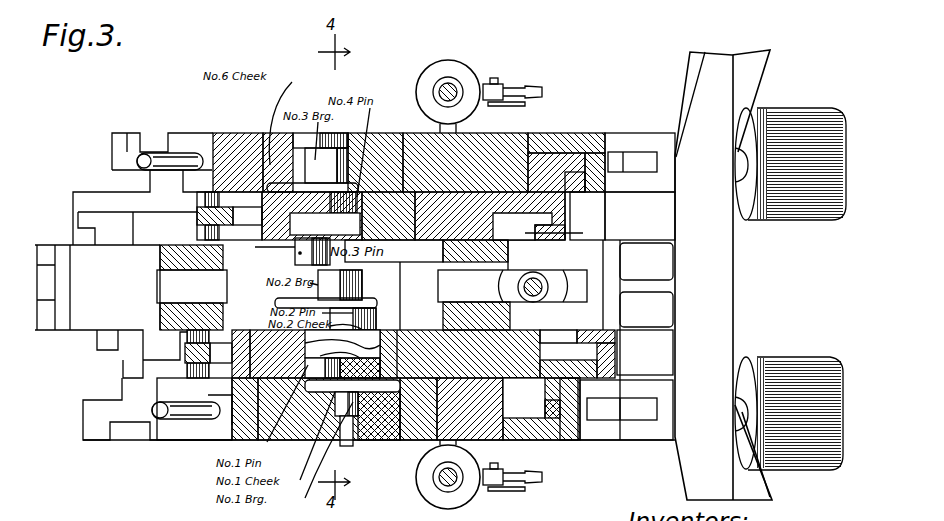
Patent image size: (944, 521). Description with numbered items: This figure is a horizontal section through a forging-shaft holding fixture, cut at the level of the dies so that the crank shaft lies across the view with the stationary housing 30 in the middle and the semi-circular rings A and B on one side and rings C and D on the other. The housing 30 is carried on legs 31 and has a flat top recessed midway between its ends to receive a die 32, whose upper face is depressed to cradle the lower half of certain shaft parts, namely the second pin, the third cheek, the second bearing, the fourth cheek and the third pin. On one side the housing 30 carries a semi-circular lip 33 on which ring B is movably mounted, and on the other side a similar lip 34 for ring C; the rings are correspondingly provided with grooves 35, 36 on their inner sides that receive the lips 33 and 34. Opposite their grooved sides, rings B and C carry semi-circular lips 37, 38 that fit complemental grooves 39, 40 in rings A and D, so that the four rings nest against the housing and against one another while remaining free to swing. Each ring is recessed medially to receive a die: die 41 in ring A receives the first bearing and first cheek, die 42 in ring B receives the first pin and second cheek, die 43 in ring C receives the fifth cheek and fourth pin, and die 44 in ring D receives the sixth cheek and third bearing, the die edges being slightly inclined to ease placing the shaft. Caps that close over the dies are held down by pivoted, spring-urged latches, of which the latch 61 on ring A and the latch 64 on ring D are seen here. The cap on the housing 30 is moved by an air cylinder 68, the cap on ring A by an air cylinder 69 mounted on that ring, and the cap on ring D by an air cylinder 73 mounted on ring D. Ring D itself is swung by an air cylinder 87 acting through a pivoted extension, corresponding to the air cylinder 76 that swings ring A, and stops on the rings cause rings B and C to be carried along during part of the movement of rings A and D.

The stationary housing 30 is at (588, 258).
The legs 31 is at (745, 78).
The die 32 is at (394, 251).
The semi-circular lip 33 is at (165, 350).
The semi-circular lip 34 is at (118, 232).
The groove 35 is at (580, 363).
The groove 36 is at (550, 214).
The semi-circular lip 37 is at (548, 430).
The semi-circular lip 38 is at (595, 132).
The groove 39 is at (515, 425).
The groove 40 is at (537, 160).
The die 41 is at (400, 437).
The die 42 is at (258, 345).
The die 43 is at (378, 205).
The die 44 is at (250, 150).
The latch 61 is at (215, 414).
The latch 64 is at (165, 157).
The air cylinder 68 is at (556, 298).
The air cylinder 69 is at (425, 484).
The air cylinder 73 is at (462, 74).
The air cylinder 76 is at (792, 470).
The air cylinder 87 is at (810, 208).